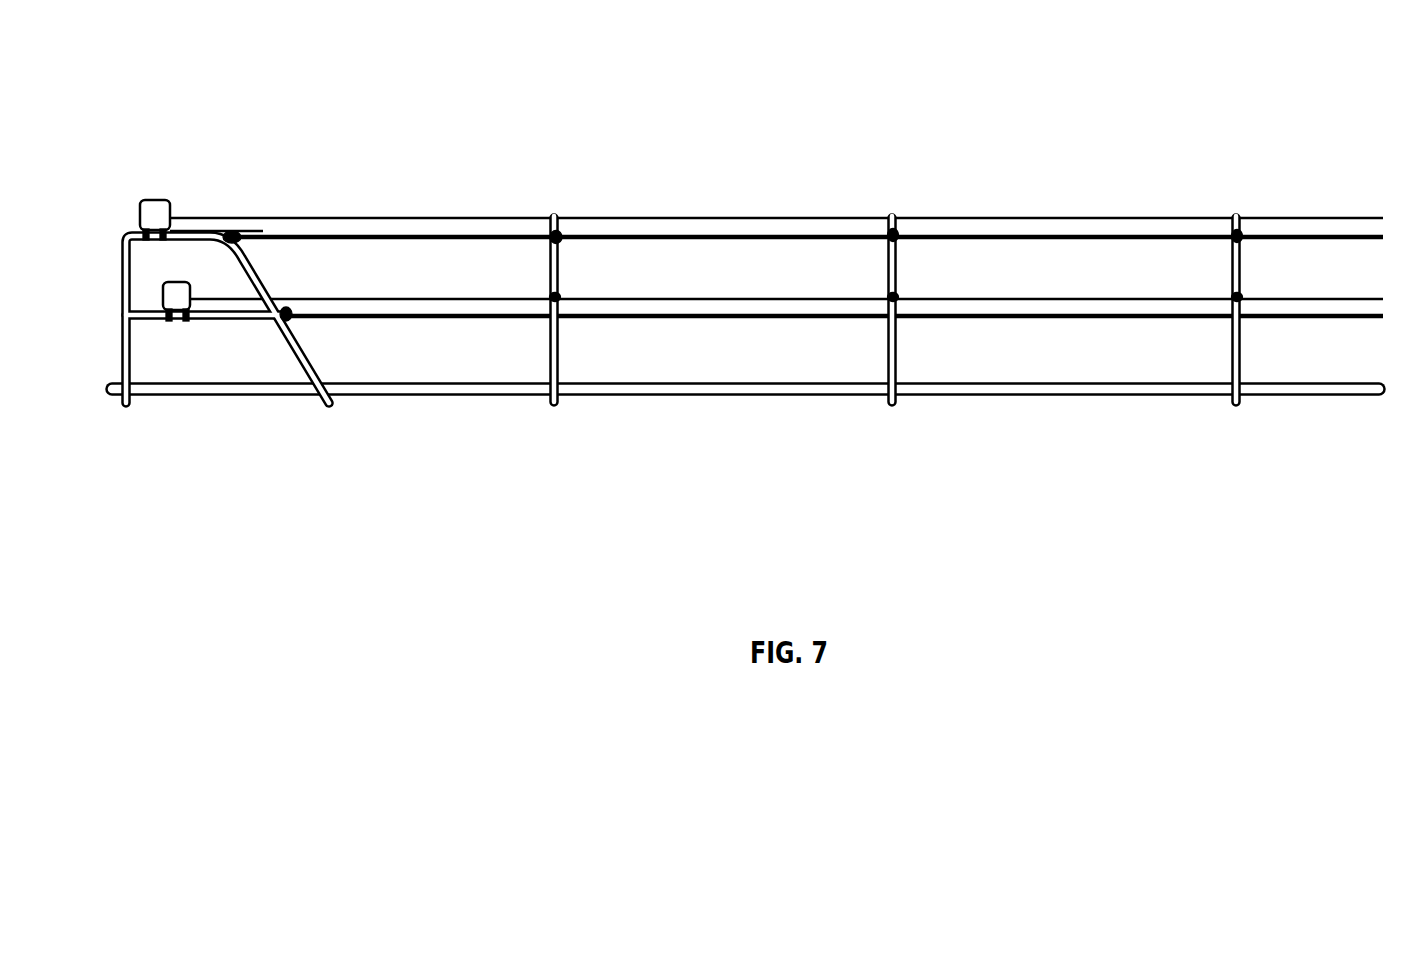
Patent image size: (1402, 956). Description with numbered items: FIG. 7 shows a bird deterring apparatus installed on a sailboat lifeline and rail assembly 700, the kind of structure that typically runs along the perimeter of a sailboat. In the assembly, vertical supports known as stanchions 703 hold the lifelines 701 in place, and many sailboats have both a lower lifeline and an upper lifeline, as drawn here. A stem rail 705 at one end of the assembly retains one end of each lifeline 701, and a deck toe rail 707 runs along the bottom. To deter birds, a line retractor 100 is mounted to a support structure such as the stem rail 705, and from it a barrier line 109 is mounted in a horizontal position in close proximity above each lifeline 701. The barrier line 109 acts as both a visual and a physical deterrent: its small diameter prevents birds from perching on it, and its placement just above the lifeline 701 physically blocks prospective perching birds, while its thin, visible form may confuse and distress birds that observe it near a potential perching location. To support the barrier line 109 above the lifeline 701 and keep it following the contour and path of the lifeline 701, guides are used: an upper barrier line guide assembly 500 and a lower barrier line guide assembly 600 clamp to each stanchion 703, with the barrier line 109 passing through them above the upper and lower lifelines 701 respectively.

The line retractor 100 is at (153, 217).
The barrier line 109 is at (463, 220).
The upper barrier line guide assembly 500 is at (558, 236).
The lower barrier line guide assembly 600 is at (557, 296).
The sailboat lifeline and rail assembly 700 is at (747, 315).
The lifeline 701 is at (1370, 238).
The stanchion 703 is at (553, 372).
The stem rail 705 is at (300, 367).
The deck toe rail 707 is at (728, 388).